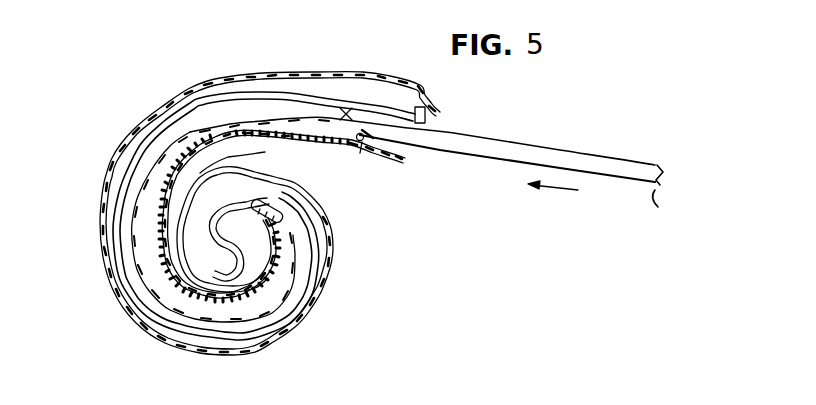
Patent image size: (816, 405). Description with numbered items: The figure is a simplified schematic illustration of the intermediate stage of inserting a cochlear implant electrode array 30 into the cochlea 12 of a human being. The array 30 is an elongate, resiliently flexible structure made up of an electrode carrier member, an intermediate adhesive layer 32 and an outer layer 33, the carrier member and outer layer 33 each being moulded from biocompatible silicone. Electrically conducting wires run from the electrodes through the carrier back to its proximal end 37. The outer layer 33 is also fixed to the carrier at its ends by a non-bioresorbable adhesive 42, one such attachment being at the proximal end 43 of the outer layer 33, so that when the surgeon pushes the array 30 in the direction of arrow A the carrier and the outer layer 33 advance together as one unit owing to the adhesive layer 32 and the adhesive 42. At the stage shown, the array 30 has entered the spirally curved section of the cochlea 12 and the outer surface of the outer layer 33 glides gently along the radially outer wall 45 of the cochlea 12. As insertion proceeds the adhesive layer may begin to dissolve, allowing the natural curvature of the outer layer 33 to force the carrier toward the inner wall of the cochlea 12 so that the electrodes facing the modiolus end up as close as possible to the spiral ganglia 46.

The cochlea 12 is at (141, 109).
The cochlear implant electrode array 30 is at (476, 158).
The intermediate adhesive layer 32 is at (262, 101).
The outer layer 33 is at (102, 228).
The proximal end 37 is at (663, 208).
The non-bioresorbable adhesive 42 is at (428, 122).
The proximal end of the outer layer 43 is at (427, 96).
The radially outer wall 45 is at (107, 250).
The spiral ganglia 46 is at (256, 138).